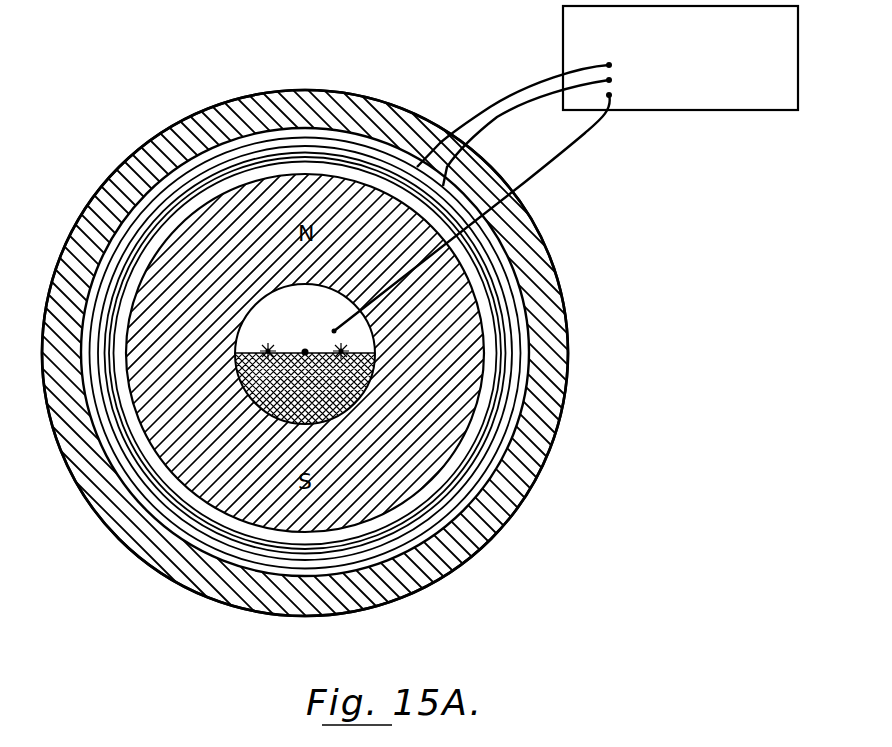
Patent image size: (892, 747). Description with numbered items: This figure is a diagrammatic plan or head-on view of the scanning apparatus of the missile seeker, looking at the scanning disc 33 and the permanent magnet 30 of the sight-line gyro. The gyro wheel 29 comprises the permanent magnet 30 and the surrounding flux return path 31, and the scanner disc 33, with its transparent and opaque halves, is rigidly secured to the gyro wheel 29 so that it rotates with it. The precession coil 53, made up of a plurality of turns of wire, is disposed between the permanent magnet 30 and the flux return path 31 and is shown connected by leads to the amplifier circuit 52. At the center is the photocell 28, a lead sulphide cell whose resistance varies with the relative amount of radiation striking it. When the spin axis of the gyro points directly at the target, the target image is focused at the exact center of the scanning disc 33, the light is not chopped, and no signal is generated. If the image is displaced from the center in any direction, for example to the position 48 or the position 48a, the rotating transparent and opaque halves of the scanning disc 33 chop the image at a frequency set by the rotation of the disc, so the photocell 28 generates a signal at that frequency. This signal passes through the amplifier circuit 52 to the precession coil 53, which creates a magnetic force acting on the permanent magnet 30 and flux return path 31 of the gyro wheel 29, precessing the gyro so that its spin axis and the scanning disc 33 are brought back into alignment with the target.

The photocell 28 is at (305, 331).
The gyro wheel 29 is at (540, 551).
The permanent magnet 30 is at (217, 489).
The flux return path 31 is at (247, 588).
The scanner disc 33 is at (241, 402).
The displaced target image position 48 is at (265, 350).
The displaced target image position 48a is at (347, 351).
The amplifier circuit 52 is at (706, 58).
The precession coil 53 is at (507, 341).